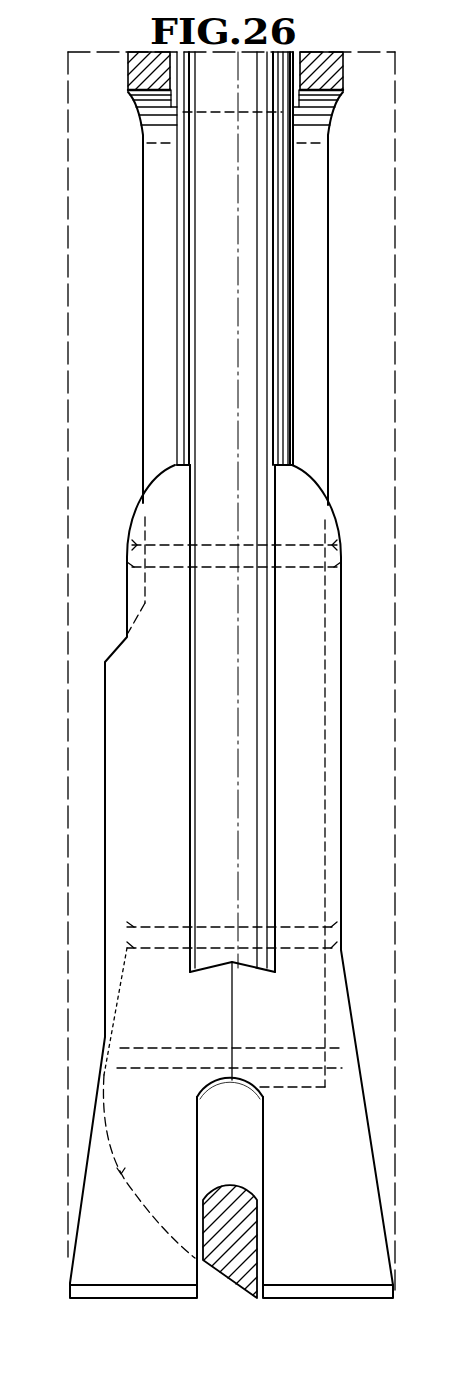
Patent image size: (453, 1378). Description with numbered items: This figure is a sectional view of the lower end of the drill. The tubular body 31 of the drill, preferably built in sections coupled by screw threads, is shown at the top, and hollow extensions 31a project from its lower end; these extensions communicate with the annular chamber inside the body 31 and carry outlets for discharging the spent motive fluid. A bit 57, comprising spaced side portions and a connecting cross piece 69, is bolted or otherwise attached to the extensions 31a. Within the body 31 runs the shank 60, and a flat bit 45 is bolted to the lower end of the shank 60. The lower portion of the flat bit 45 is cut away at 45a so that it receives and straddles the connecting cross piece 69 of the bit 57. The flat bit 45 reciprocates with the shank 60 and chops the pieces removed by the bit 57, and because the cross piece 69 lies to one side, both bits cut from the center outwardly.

The body of the drill 31 is at (345, 70).
The extensions 31a is at (318, 153).
The shank 60 is at (200, 275).
The flat bit 45 is at (87, 1273).
The cut away portion 45a is at (212, 1138).
The bit 57 is at (120, 1173).
The connecting cross piece 69 is at (233, 1203).